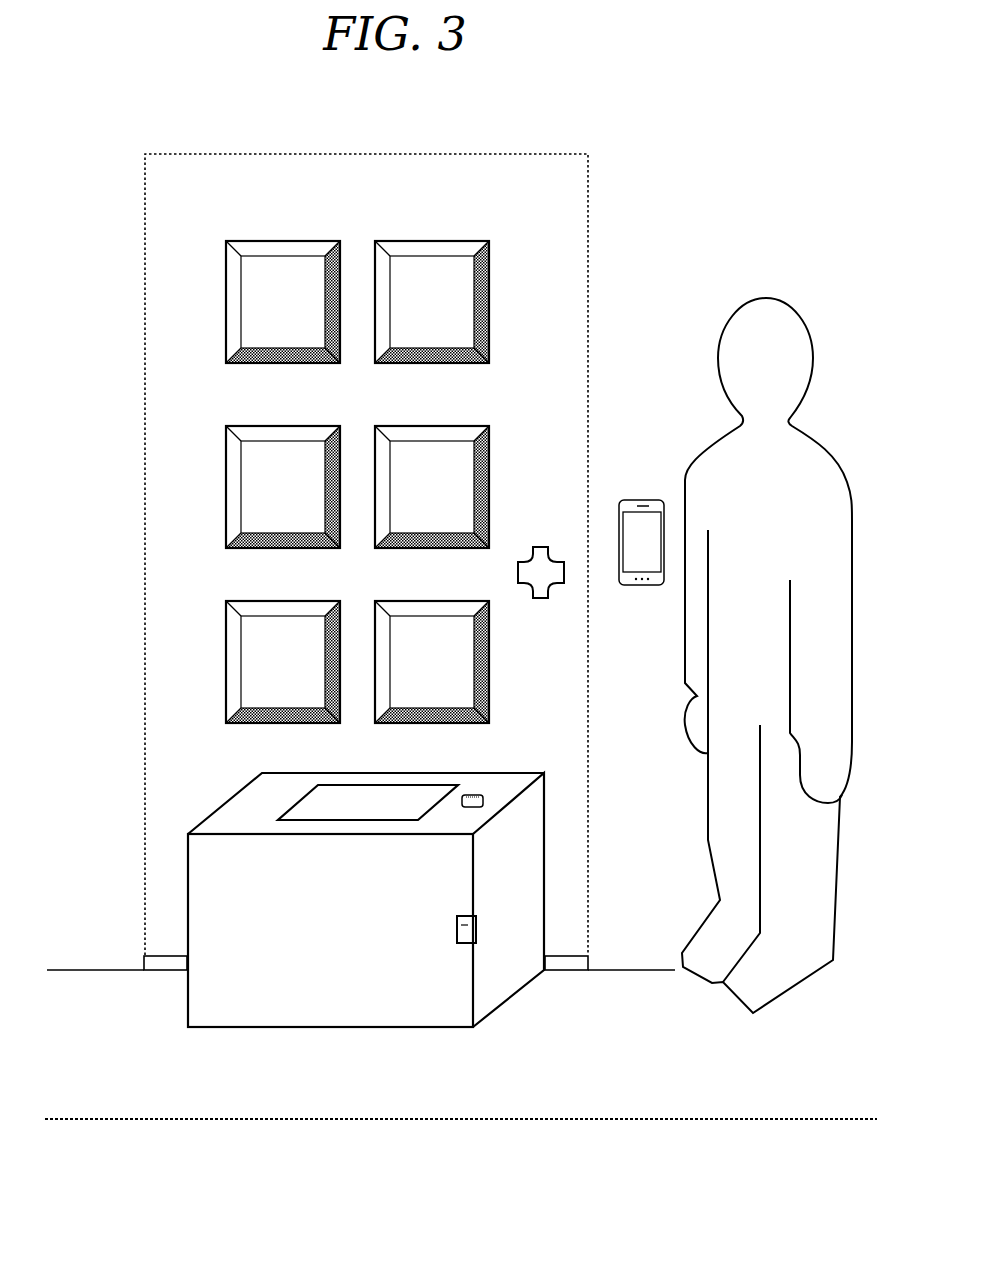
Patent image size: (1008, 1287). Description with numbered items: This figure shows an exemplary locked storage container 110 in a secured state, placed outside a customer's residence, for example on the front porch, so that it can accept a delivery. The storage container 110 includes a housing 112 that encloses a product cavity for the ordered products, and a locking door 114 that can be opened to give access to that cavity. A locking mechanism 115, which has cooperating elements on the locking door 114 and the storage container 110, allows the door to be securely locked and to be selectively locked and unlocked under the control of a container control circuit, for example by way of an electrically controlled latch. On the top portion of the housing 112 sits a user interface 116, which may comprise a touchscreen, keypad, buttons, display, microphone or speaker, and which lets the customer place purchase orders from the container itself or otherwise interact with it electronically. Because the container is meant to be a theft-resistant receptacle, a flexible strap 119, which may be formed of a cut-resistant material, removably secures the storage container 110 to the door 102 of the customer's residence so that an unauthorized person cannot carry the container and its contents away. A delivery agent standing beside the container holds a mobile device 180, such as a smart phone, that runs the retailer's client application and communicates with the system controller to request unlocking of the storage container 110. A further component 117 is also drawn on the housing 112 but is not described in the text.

The door 102 is at (563, 358).
The storage container 110 is at (337, 915).
The housing 112 is at (498, 990).
The locking door 114 is at (317, 1012).
The locking mechanism 115 is at (468, 925).
The user interface 116 is at (370, 798).
The sensor / camera module 117 is at (483, 801).
The flexible strap 119 is at (155, 962).
The mobile device 180 is at (642, 493).